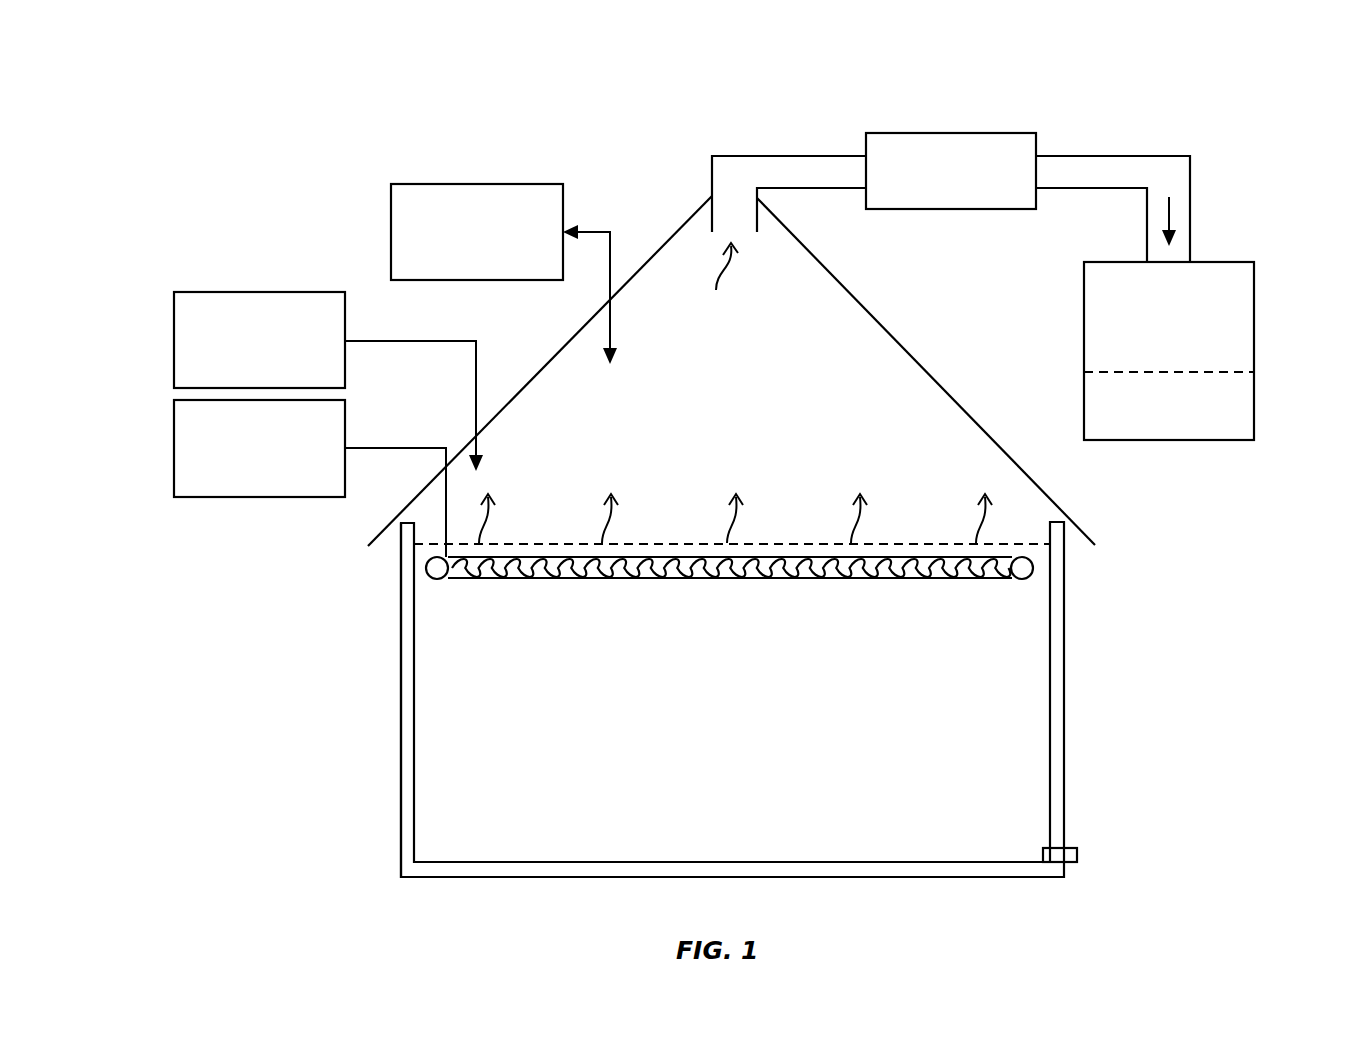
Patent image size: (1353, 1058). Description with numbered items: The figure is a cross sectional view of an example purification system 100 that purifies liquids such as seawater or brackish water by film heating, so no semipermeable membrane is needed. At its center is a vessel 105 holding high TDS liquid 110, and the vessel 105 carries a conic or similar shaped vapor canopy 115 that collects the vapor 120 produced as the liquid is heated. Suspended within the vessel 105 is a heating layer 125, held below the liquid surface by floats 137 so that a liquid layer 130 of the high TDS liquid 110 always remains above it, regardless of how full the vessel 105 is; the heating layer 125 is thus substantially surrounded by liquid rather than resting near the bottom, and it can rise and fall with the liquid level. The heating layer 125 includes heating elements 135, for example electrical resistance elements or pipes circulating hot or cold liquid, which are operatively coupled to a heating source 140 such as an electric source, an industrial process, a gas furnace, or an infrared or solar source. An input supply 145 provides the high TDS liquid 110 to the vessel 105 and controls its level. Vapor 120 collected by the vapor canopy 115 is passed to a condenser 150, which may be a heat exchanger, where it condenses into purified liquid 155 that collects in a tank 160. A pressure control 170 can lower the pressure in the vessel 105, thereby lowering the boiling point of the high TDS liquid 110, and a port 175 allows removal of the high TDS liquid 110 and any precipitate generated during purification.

The purification system 100 is at (200, 118).
The vessel 105 is at (368, 762).
The high TDS liquid 110 is at (470, 802).
The vapor canopy 115 is at (893, 340).
The vapor 120 is at (735, 393).
The heating layer 125 is at (705, 577).
The liquid layer 130 is at (748, 552).
The heating elements 135 is at (828, 573).
The floats 137 is at (435, 566).
The heating source 140 is at (310, 478).
The input supply 145 is at (328, 381).
The condenser 150 is at (1028, 197).
The purified liquid 155 is at (1216, 418).
The tank 160 is at (1169, 351).
The pressure control 170 is at (504, 274).
The port 175 is at (1073, 852).